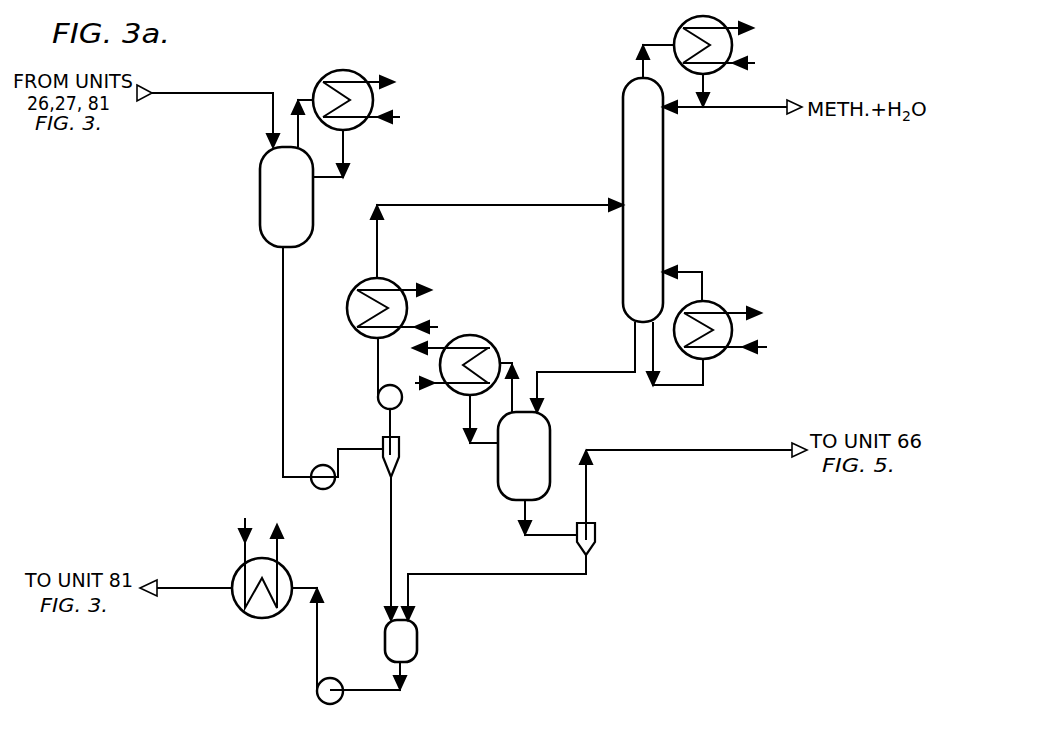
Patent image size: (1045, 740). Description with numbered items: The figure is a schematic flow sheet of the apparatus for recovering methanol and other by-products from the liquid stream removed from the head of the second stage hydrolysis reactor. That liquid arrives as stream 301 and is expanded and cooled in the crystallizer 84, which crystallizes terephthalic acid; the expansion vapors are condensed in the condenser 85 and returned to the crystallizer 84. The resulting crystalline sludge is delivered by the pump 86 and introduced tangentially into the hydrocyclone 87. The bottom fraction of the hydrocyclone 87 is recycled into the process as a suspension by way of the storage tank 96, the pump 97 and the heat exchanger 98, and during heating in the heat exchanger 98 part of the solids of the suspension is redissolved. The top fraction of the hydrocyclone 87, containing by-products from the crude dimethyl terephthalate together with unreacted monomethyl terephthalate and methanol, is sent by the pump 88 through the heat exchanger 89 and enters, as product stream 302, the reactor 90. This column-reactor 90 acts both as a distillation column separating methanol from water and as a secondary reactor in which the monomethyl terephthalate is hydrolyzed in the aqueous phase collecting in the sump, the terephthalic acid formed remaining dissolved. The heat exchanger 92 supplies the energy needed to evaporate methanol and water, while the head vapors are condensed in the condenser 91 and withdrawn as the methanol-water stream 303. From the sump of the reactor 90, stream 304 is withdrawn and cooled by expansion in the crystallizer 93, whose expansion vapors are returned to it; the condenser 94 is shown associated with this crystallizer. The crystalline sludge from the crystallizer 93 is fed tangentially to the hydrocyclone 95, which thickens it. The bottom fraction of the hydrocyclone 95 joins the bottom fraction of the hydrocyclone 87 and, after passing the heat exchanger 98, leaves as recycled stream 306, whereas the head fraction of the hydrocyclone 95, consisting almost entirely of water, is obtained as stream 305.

The crystallizer 84 is at (260, 211).
The condenser 85 is at (347, 70).
The pump 86 is at (333, 487).
The hydrocyclone 87 is at (400, 466).
The pump 88 is at (403, 400).
The heat exchanger 89 is at (359, 283).
The reactor 90 is at (663, 163).
The condenser 91 is at (679, 28).
The heat exchanger 92 is at (718, 301).
The crystallizer 93 is at (551, 446).
The heat exchanger (condenser) 94 is at (481, 346).
The hydrocyclone 95 is at (597, 548).
The storage tank 96 is at (418, 648).
The pump 97 is at (340, 700).
The heat exchanger 98 is at (287, 577).
The stream 301 is at (215, 99).
The product stream 302 is at (497, 220).
The stream 303 is at (732, 90).
The stream 304 is at (583, 367).
The stream 305 is at (696, 434).
The stream 306 is at (186, 572).